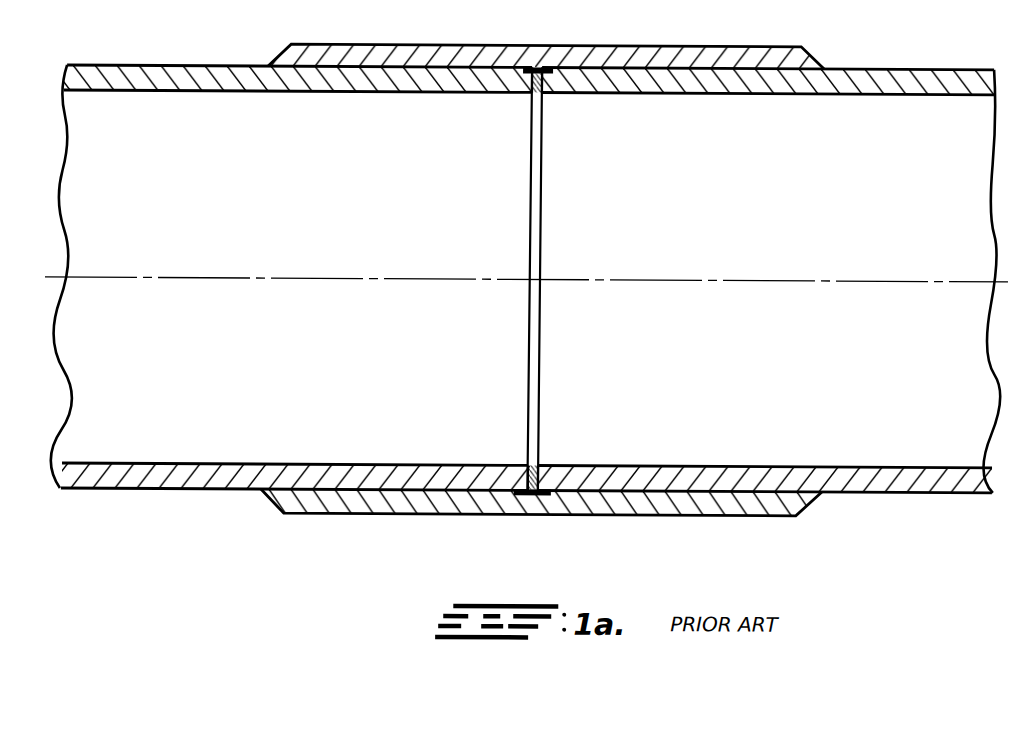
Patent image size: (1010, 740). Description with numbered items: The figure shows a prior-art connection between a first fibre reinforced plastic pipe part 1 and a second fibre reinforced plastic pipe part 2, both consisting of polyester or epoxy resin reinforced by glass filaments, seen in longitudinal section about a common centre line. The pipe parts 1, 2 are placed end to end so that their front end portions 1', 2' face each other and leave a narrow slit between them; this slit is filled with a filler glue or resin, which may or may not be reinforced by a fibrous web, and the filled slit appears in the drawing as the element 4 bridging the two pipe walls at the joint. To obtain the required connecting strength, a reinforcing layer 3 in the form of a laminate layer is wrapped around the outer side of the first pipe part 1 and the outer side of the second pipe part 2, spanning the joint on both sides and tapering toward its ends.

The first fibre reinforced plastic pipe part 1 is at (292, 261).
The second fibre reinforced plastic pipe part 2 is at (770, 261).
The reinforcing layer 3 is at (365, 50).
The T-shaped web / partition insert 4 is at (534, 177).
The front end portion of the first pipe part 1' is at (498, 278).
The front end portion of the second pipe part 2' is at (586, 279).